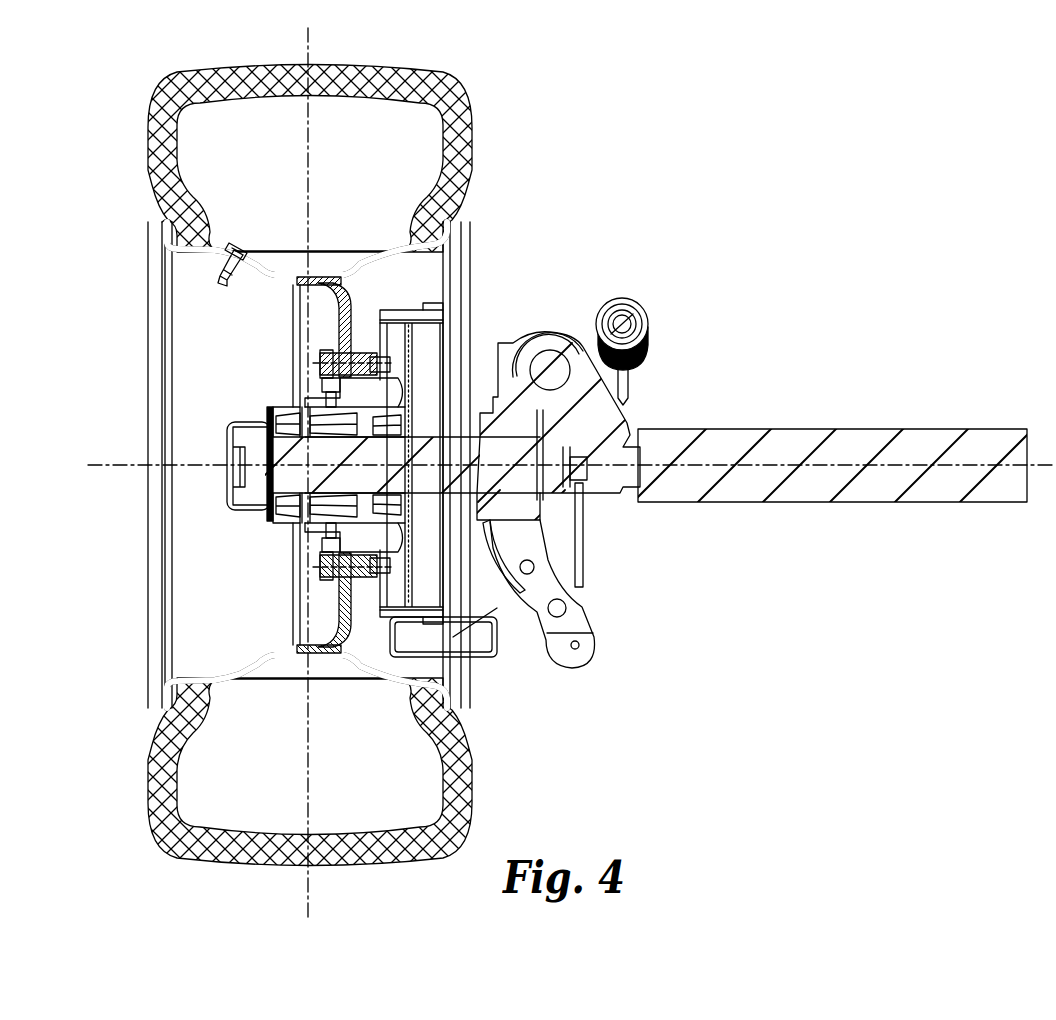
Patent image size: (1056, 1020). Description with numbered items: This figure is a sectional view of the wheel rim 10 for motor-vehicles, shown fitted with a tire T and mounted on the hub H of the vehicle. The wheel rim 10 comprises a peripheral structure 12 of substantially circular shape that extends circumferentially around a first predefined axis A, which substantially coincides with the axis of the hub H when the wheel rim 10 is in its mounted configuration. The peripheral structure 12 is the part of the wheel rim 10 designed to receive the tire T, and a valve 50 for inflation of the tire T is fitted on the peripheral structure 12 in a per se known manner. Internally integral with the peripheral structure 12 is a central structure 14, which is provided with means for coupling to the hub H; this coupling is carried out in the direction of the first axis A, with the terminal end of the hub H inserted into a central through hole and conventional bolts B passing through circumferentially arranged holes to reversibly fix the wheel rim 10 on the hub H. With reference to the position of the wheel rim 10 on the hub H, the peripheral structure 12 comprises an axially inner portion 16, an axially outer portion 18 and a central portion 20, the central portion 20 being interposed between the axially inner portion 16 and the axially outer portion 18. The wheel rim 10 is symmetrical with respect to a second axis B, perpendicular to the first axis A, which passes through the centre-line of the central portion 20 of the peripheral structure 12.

The wheel rim 10 is at (302, 465).
The peripheral structure 12 is at (349, 258).
The central structure 14 is at (334, 597).
The axially inner portion 16 is at (382, 682).
The axially outer portion 18 is at (250, 682).
The central portion 20 is at (319, 672).
The valve 50 is at (218, 266).
The tire T is at (461, 139).
The hub H is at (247, 510).
The bolts / second axis B is at (393, 461).
The first axis A is at (560, 467).